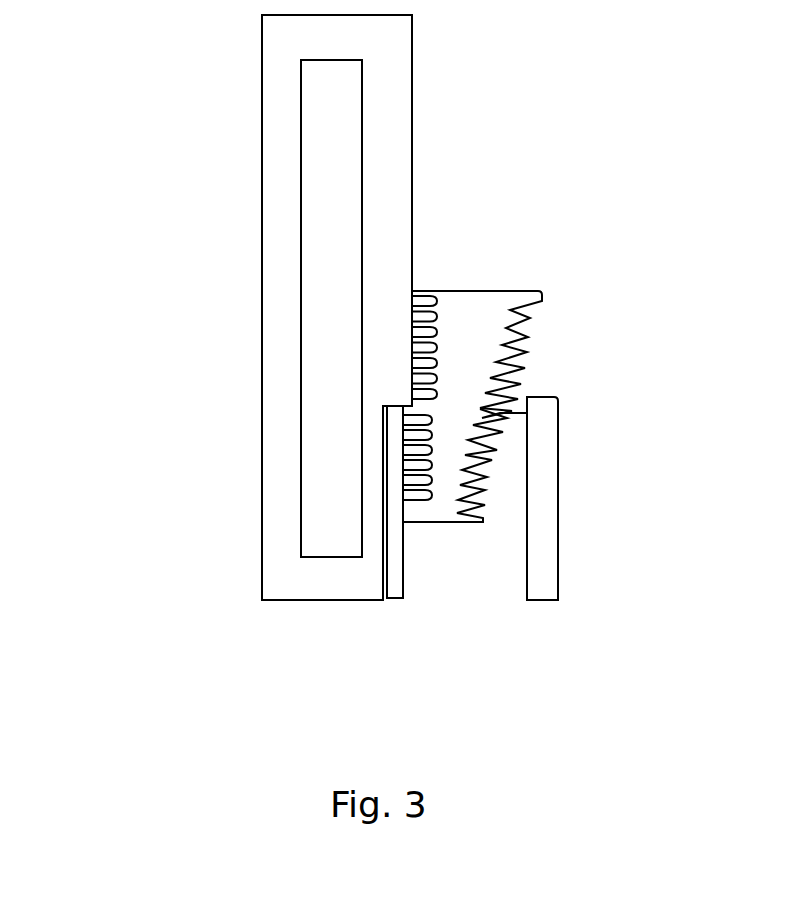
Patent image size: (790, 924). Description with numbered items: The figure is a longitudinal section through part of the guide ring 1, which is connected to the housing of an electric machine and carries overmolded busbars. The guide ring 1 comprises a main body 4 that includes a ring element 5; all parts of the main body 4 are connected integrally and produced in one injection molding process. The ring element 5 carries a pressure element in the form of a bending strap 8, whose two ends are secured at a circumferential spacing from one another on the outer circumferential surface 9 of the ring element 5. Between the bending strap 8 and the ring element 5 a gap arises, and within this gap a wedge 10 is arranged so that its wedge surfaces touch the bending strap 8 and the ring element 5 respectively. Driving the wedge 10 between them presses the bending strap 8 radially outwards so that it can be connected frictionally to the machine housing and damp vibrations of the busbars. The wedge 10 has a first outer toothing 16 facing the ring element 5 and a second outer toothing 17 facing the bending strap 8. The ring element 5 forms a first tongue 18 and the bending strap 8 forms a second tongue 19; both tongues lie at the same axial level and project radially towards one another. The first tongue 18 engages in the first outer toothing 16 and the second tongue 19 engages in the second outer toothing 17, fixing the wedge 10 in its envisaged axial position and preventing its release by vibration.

The guide ring 1 is at (188, 170).
The main body 4 is at (221, 125).
The ring element 5 is at (280, 283).
The bending strap 8 is at (545, 541).
The outer circumferential surface 9 is at (412, 93).
The wedge 10 is at (467, 437).
The first outer toothing 16 is at (437, 314).
The second outer toothing 17 is at (519, 293).
The first tongue 18 is at (419, 410).
The second tongue 19 is at (518, 405).